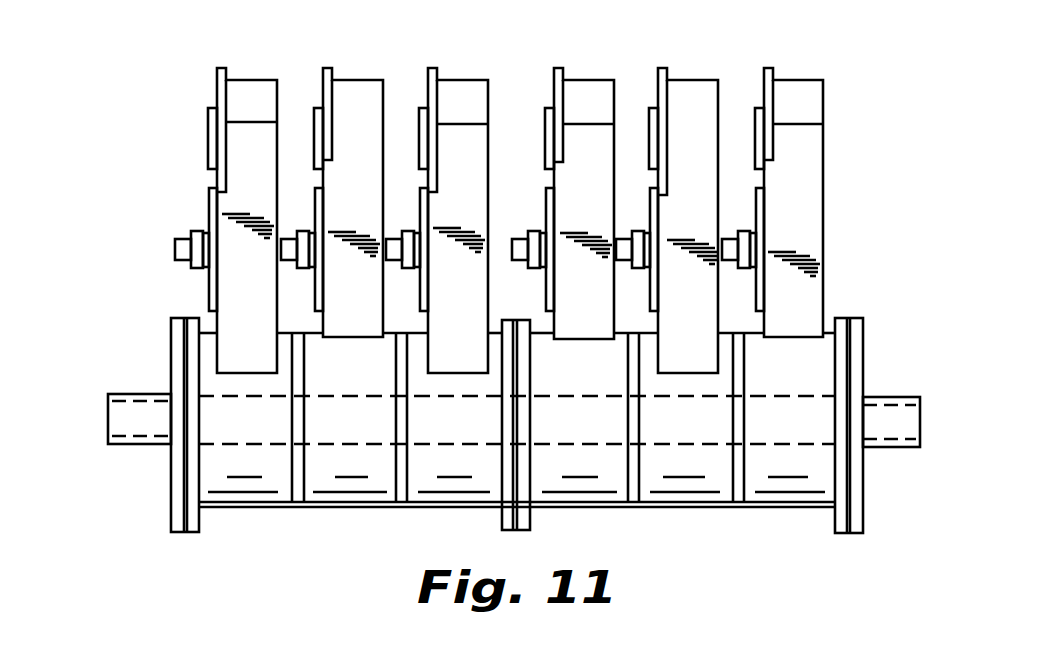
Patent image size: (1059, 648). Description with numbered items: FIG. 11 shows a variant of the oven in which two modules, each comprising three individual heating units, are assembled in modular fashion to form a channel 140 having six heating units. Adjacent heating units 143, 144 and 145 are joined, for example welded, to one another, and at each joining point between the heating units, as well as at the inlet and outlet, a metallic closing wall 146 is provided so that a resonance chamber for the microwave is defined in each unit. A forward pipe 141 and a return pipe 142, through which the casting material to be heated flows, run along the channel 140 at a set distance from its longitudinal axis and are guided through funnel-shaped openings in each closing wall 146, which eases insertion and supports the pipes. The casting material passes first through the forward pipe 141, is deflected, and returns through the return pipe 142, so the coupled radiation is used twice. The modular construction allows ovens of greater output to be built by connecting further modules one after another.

The channel 140 is at (487, 457).
The forward pipe 141 is at (137, 413).
The return pipe 142 is at (891, 422).
The heating unit 143 is at (244, 80).
The heating unit 144 is at (353, 80).
The heating unit 145 is at (457, 80).
The metallic closing wall 146 is at (297, 498).